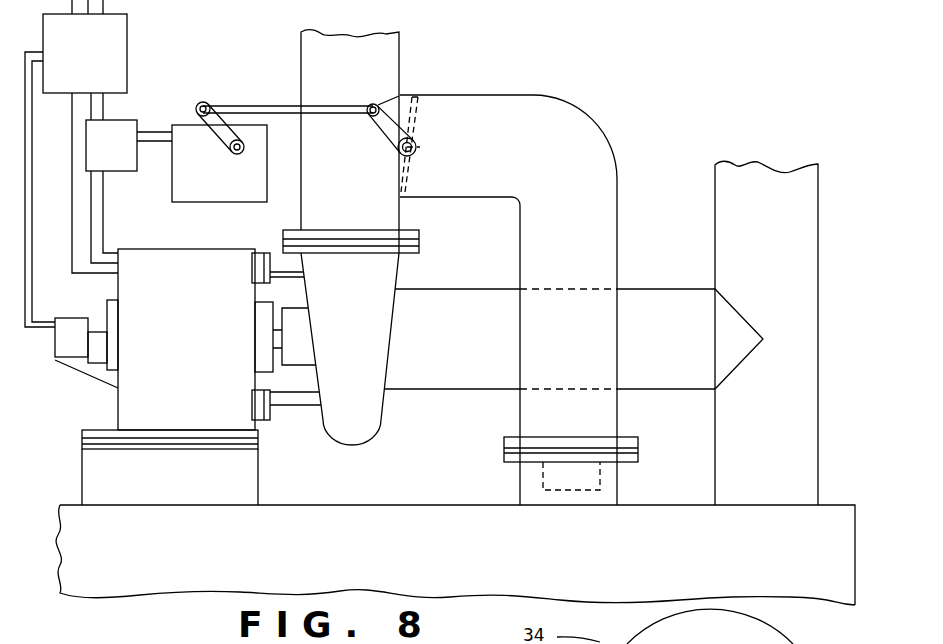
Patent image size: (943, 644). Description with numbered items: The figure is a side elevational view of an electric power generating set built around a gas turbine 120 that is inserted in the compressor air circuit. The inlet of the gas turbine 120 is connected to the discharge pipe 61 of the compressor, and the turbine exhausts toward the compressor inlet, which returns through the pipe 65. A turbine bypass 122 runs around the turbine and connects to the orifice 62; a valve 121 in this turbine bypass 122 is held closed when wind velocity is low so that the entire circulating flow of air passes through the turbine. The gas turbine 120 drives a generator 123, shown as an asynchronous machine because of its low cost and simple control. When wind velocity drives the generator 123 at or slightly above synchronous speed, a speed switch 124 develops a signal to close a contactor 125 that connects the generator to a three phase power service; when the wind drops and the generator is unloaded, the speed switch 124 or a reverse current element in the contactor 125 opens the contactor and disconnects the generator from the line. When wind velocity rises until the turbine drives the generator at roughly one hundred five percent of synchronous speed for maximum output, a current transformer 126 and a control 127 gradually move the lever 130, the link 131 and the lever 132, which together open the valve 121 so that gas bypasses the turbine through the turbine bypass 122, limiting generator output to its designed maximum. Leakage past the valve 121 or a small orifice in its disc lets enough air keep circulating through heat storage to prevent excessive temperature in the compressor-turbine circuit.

The discharge pipe 61 is at (398, 47).
The orifice 62 is at (537, 488).
The pipe 65 is at (818, 205).
The gas turbine 120 is at (380, 428).
The valve 121 is at (418, 118).
The turbine bypass 122 is at (573, 97).
The generator 123 is at (118, 403).
The speed switch 124 is at (50, 345).
The contactor 125 is at (127, 39).
The current transformer 126 is at (122, 171).
The control 127 is at (247, 202).
The lever 130 is at (195, 103).
The link 131 is at (257, 103).
The lever 132 is at (400, 95).